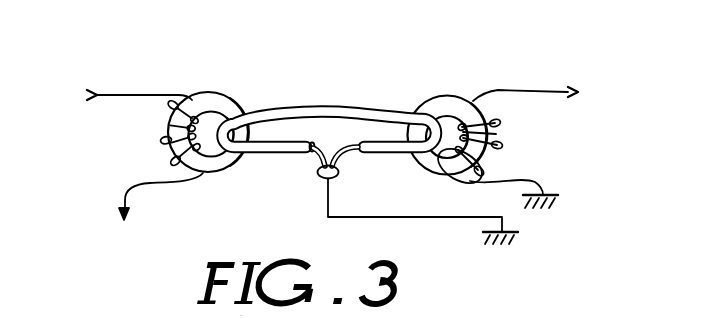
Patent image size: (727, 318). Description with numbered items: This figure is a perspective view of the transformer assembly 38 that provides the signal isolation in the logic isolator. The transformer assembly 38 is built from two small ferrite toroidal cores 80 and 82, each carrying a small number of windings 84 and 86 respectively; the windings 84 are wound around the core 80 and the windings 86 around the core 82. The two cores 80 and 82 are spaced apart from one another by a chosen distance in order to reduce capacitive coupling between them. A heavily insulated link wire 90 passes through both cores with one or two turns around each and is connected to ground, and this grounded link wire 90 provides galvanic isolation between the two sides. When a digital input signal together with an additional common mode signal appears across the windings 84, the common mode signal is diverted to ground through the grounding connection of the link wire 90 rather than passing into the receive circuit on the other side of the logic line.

The transformer assembly 38 is at (346, 58).
The ferrite toroidal core 80 is at (241, 93).
The ferrite toroidal core 82 is at (431, 91).
The windings 84 is at (175, 108).
The windings 86 is at (500, 124).
The link wire 90 is at (294, 155).